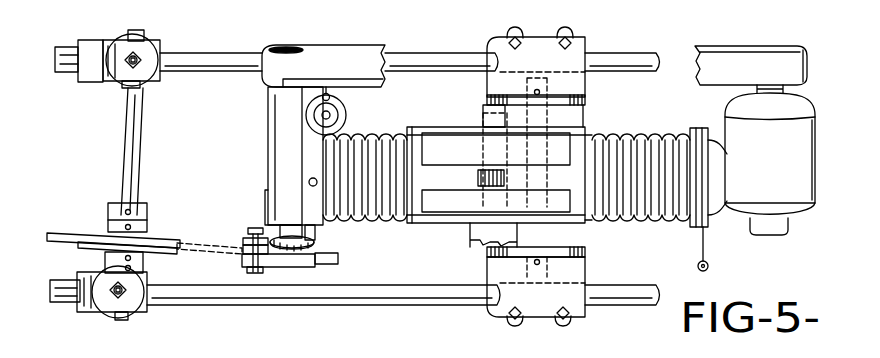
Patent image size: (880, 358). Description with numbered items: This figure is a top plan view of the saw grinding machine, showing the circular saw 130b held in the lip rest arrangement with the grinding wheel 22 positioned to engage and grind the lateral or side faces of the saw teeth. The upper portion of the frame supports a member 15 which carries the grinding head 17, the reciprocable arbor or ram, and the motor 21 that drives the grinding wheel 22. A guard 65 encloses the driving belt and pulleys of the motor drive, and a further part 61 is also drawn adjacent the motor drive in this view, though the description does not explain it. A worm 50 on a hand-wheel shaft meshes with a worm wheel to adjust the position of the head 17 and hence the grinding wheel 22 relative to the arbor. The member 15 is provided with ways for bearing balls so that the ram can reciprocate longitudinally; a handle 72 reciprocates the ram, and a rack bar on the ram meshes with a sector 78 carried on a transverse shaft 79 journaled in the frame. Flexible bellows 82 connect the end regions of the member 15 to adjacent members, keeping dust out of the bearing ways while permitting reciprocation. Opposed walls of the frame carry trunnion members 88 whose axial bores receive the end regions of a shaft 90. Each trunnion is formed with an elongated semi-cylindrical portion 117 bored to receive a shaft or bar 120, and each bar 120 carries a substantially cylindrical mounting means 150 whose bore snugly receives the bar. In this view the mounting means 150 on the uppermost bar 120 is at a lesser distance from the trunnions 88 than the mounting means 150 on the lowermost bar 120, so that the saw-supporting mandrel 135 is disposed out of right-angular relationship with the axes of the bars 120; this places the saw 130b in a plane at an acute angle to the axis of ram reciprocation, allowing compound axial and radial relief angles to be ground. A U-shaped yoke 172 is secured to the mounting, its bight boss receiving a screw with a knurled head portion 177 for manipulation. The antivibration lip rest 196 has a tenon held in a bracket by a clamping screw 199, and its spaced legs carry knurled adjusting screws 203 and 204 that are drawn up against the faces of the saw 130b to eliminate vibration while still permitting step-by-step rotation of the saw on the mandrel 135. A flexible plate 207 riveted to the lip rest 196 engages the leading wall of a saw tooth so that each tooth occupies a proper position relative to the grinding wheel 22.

The member 15 is at (453, 225).
The grinding head 17 is at (265, 142).
The motor 21 is at (770, 162).
The grinding wheel 22 is at (315, 242).
The worm 50 is at (341, 104).
The ball weight 61 is at (709, 265).
The guard 65 is at (323, 44).
The handle 72 is at (309, 182).
The sector 78 is at (478, 181).
The shaft 79 is at (487, 152).
The flexible bellows 82 is at (367, 136).
The trunnion members 88 is at (585, 95).
The shaft 90 is at (547, 118).
The semi-cylindrical portions 117 is at (580, 43).
The shaft 120 is at (213, 56).
The circular saw 130b is at (86, 208).
The mandrel 135 is at (145, 106).
The mounting means 150 is at (157, 48).
The yoke 172 is at (118, 52).
The knurled head portion 177 is at (135, 68).
The lip rest 196 is at (277, 262).
The clamping screw 199 is at (323, 264).
The knurled adjusting screw 203 is at (255, 230).
The knurled adjusting screw 204 is at (209, 262).
The flexible plate 207 is at (284, 263).